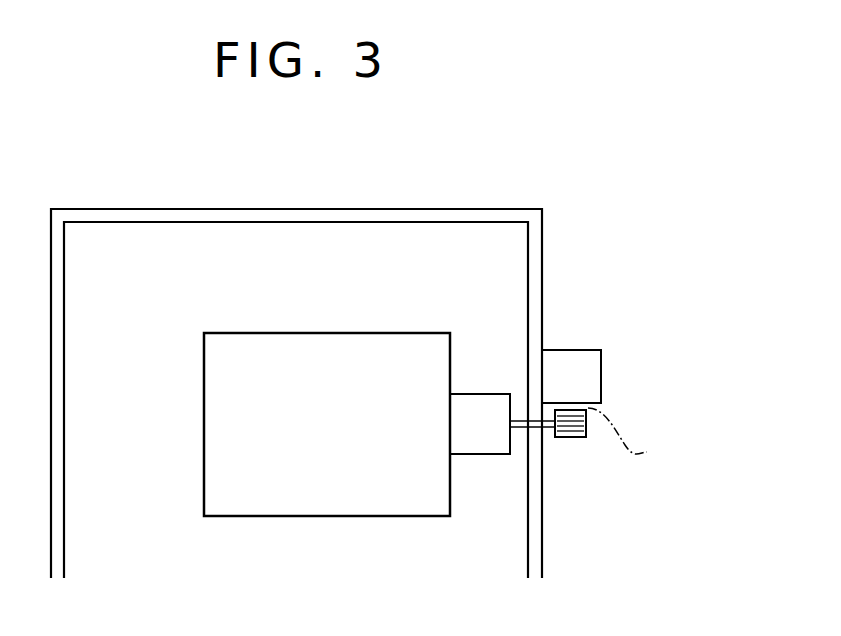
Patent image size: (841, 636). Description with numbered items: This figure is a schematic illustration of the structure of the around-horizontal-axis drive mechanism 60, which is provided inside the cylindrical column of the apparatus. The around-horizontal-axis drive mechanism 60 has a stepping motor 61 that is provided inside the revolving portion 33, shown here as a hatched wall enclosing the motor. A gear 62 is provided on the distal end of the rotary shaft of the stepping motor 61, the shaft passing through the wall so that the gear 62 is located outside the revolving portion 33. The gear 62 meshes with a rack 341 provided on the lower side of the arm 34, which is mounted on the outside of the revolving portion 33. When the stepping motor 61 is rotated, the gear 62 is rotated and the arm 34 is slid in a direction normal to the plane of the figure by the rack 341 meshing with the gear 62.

The around-horizontal-axis drive mechanism 60 is at (434, 276).
The revolving portion 33 is at (542, 237).
The arm 34 is at (578, 360).
The rack 341 is at (645, 437).
The stepping motor 61 is at (322, 500).
The gear 62 is at (572, 437).